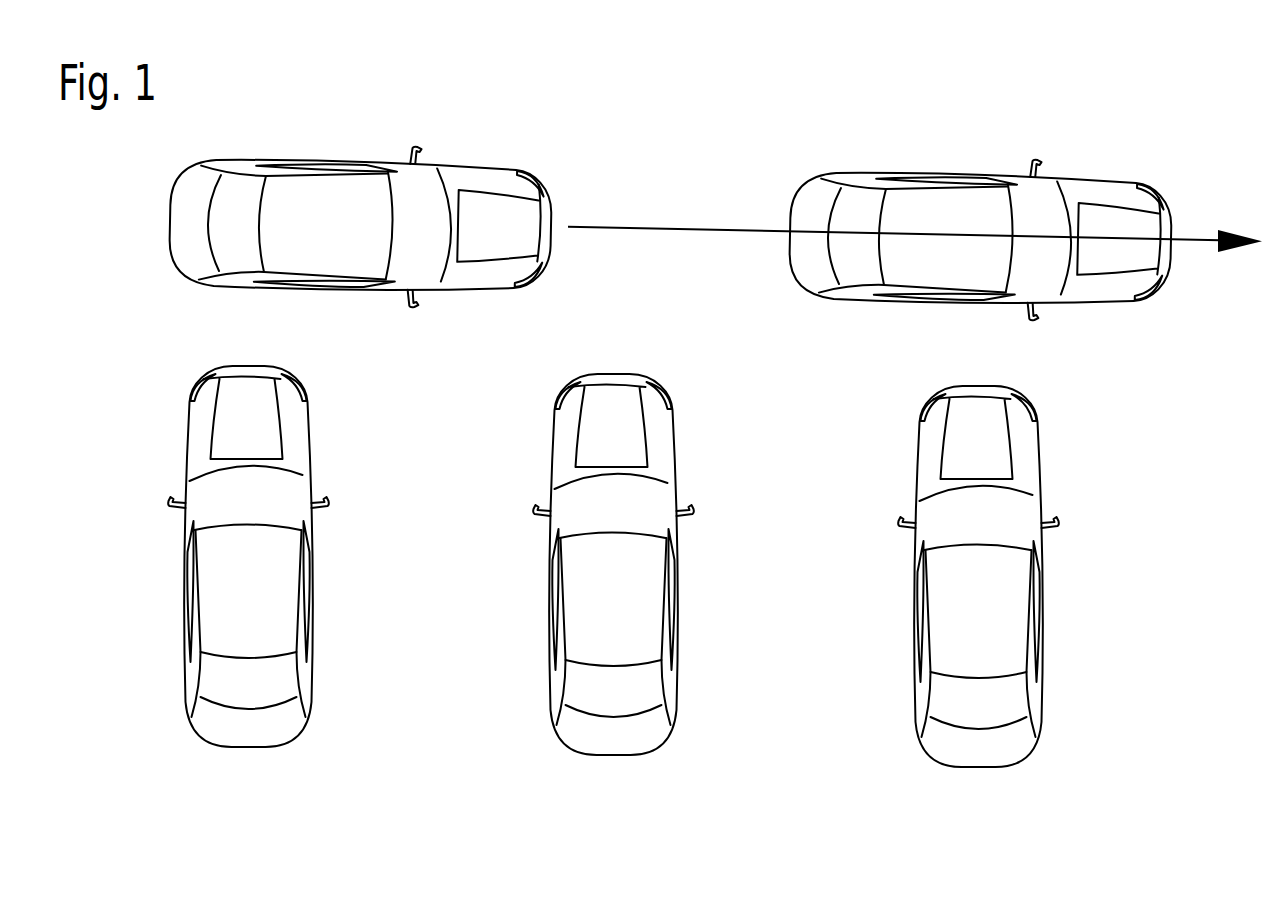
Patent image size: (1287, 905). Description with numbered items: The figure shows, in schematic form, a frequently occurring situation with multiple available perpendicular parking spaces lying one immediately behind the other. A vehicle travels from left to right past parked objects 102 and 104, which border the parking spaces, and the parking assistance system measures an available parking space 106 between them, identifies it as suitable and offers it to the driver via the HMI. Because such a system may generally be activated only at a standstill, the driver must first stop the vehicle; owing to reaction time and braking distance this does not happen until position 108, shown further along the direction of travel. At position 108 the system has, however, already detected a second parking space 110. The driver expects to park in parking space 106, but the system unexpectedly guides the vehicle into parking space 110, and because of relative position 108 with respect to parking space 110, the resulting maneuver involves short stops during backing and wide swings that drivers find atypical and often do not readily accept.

The object 102 is at (241, 735).
The object 104 is at (605, 742).
The parking space 106 is at (430, 752).
The position 108 is at (1084, 140).
The parking space 110 is at (805, 760).